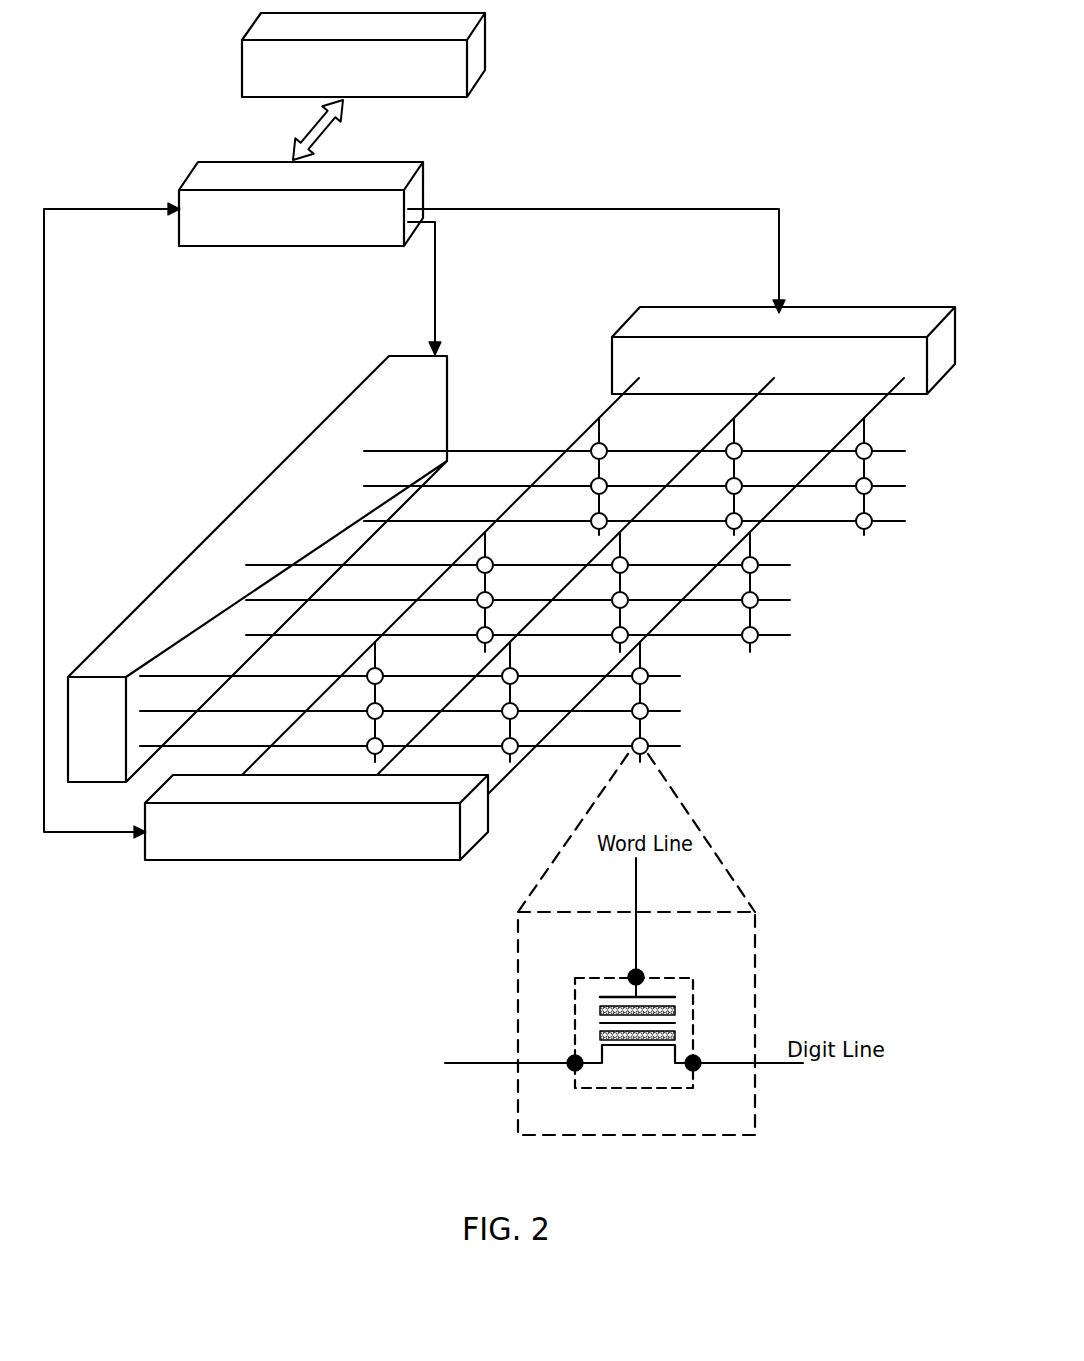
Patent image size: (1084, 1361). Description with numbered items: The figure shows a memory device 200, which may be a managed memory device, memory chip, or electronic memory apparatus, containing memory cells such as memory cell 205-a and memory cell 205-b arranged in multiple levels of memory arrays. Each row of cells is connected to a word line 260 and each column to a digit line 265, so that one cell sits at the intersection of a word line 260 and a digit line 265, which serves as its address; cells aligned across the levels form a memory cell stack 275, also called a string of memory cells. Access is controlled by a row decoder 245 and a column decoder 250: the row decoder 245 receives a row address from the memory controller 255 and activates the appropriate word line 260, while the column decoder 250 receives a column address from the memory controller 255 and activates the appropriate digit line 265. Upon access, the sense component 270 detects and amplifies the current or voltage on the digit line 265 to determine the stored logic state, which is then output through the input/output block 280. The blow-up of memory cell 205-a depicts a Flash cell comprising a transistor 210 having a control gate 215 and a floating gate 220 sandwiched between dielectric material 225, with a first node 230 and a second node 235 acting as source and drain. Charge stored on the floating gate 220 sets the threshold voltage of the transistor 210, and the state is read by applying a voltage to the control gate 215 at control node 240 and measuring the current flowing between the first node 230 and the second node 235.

The memory device 200 is at (772, 1158).
The memory cell 205-a is at (648, 753).
The memory cell 205-b is at (867, 532).
The transistor 210 is at (637, 993).
The control gate 215 is at (655, 997).
The floating gate 220 is at (605, 1023).
The dielectric material 225 is at (675, 1037).
The first node 230 is at (572, 1070).
The second node 235 is at (696, 1070).
The control node 240 is at (632, 975).
The row decoder 245 is at (282, 461).
The column decoder 250 is at (692, 310).
The memory controller 255 is at (288, 248).
The word line 260 is at (530, 449).
The digit line 265 is at (609, 413).
The sense component 270 is at (295, 862).
The memory cell stack 275 is at (697, 670).
The input/output block 280 is at (480, 75).